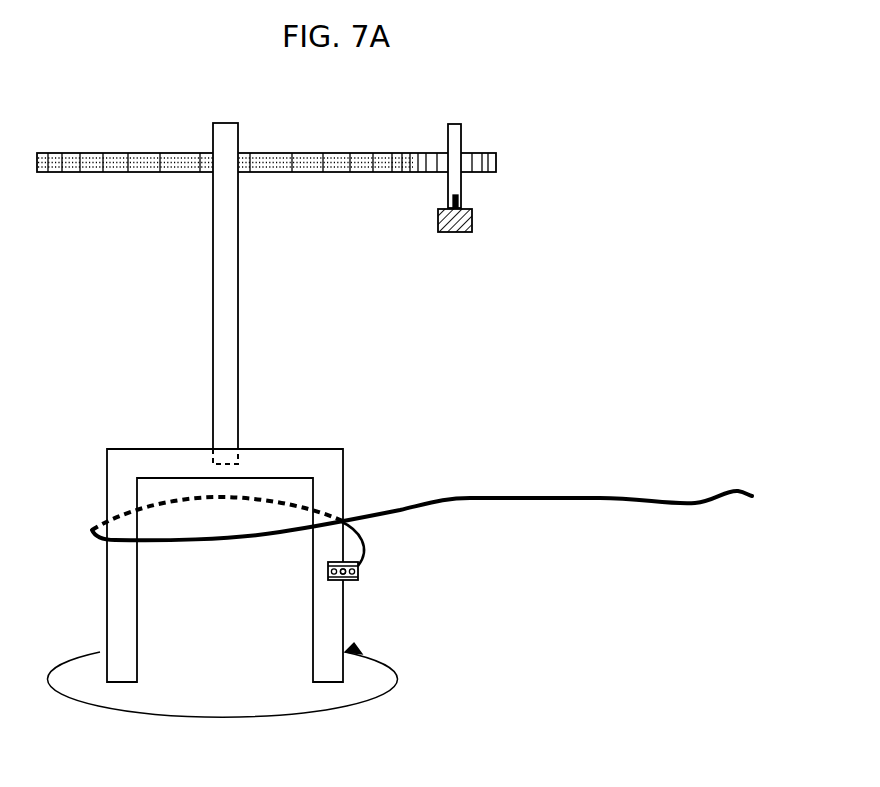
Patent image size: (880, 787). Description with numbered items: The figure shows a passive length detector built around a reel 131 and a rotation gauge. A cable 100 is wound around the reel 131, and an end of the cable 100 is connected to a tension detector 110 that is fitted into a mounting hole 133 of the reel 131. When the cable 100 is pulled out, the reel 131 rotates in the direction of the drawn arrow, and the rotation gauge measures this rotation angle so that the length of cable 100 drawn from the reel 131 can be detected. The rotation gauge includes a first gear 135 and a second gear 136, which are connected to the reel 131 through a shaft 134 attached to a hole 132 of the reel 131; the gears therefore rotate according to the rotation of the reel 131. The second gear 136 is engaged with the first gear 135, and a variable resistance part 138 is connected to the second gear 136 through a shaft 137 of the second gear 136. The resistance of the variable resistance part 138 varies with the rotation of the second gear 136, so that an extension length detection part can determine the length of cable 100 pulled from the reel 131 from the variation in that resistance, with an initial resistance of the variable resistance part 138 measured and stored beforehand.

The cable 100 is at (543, 497).
The tension detector 110 is at (358, 581).
The reel 131 is at (287, 449).
The hole 132 is at (212, 457).
The mounting hole 133 is at (330, 568).
The shaft 134 is at (236, 319).
The first gear 135 is at (305, 155).
The second gear 136 is at (487, 153).
The shaft of the second gear 137 is at (461, 188).
The variable resistance part 138 is at (472, 221).